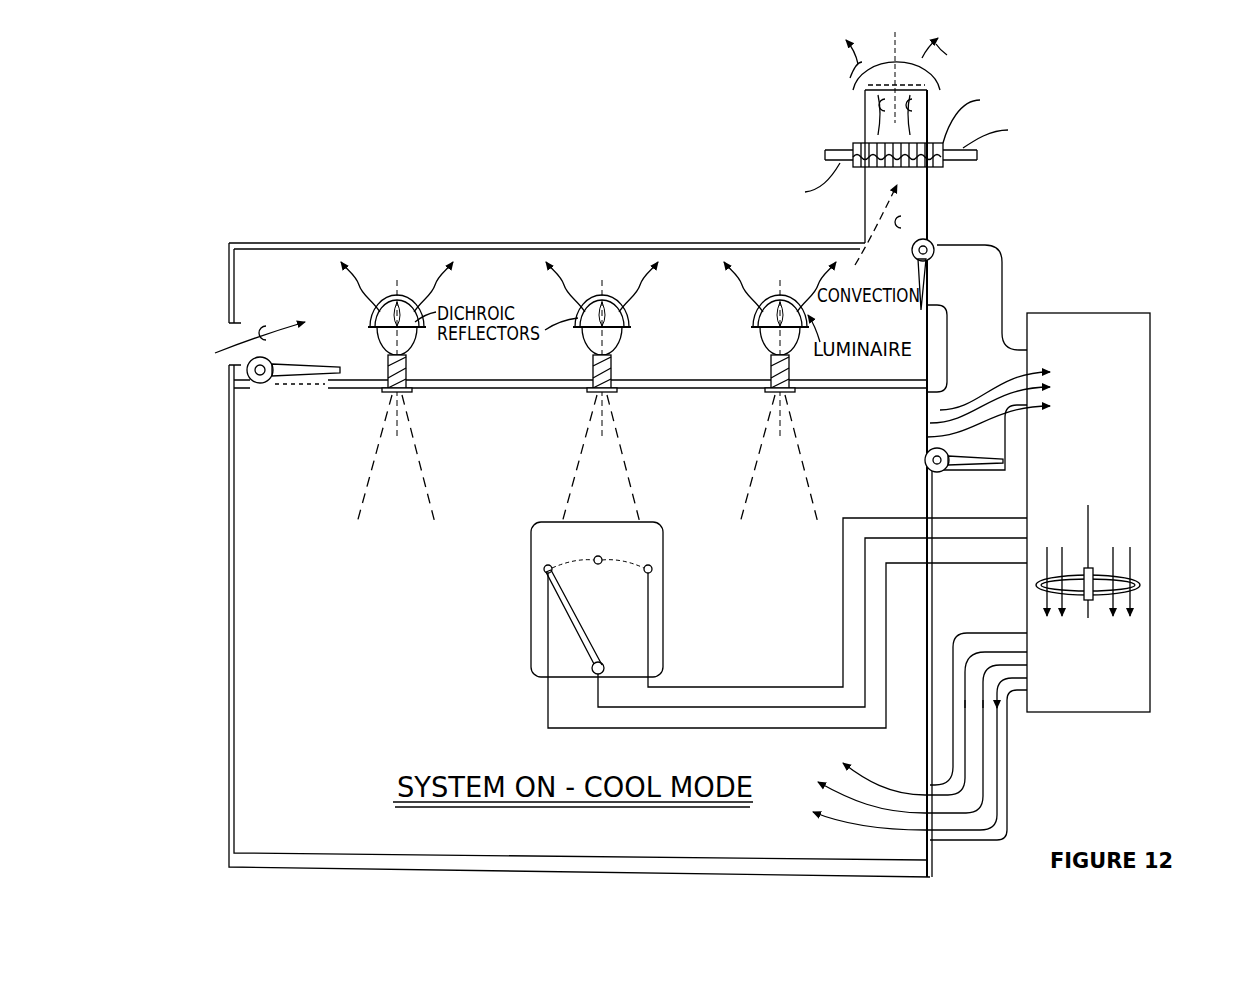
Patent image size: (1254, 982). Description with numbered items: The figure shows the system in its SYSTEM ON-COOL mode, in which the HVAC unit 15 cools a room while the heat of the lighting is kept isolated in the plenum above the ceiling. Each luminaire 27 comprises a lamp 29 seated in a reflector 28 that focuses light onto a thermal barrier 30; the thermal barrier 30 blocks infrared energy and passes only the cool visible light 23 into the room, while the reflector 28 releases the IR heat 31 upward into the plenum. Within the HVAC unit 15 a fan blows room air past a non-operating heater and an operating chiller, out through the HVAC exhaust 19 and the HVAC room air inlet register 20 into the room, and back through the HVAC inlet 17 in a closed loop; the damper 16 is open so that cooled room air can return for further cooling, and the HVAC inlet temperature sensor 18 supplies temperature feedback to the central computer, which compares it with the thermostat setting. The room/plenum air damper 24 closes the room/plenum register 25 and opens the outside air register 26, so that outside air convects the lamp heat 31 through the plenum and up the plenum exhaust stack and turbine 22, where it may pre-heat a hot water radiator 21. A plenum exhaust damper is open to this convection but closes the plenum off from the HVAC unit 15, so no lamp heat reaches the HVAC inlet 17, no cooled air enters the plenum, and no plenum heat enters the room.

The HVAC unit 15 is at (1125, 489).
The damper 16 is at (663, 597).
The HVAC inlet 17 is at (666, 297).
The HVAC inlet temperature sensor 18 is at (377, 316).
The HVAC exhaust 19 is at (530, 380).
The HVAC room air inlet register 20 is at (428, 393).
The hot water radiator 21 is at (395, 630).
The plenum exhaust stack and turbine 22 is at (768, 374).
The cool visible light 23 is at (587, 459).
The room/plenum air damper 24 is at (976, 735).
The room/plenum register 25 is at (244, 390).
The outside air register 26 is at (923, 457).
The luminaire 27 is at (1034, 341).
The reflector 28 is at (1137, 572).
The lamp 29 is at (930, 243).
The thermal barrier 30 is at (864, 112).
The IR heat 31 is at (245, 322).